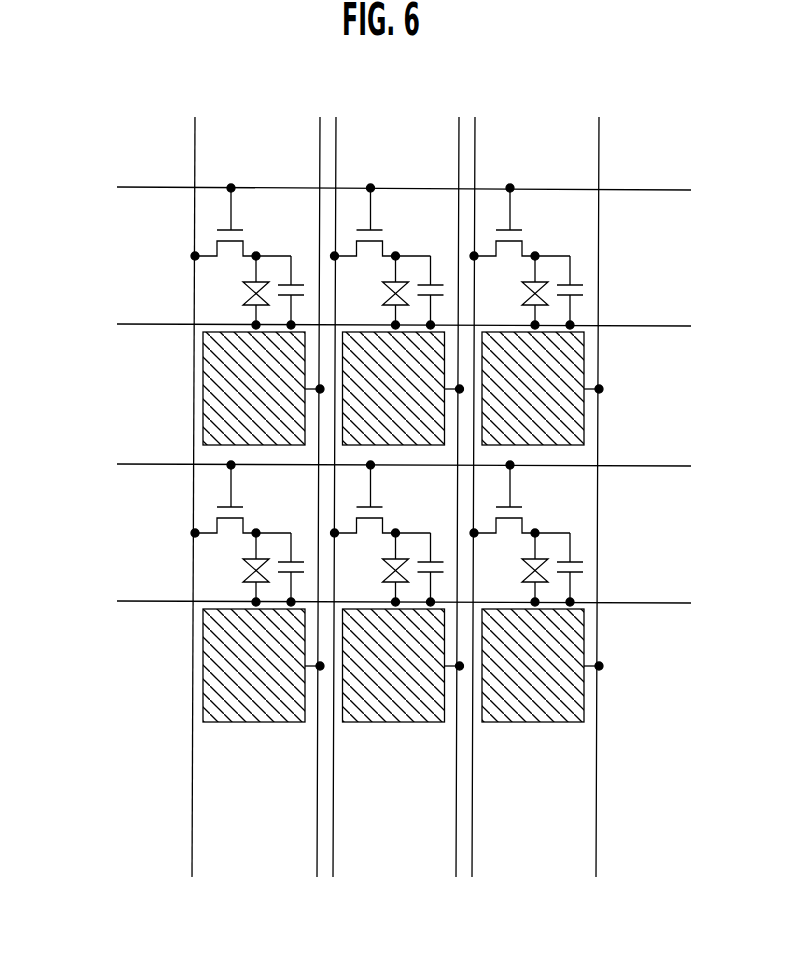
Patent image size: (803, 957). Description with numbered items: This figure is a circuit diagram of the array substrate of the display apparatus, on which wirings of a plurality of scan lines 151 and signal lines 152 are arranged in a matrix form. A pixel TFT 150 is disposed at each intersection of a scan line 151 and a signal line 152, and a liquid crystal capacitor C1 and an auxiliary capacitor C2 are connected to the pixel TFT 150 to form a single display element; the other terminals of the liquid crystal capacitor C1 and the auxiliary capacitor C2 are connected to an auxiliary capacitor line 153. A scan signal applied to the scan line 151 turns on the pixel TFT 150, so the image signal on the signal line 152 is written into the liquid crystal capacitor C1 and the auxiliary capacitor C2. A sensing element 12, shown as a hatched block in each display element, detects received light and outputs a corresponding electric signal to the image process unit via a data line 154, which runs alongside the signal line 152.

The sensing element 12 is at (203, 389).
The pixel TFT 150 is at (218, 235).
The scan line 151 is at (134, 190).
The signal line 152 is at (196, 135).
The auxiliary capacitor line 153 is at (134, 327).
The data line 154 is at (321, 135).
The liquid crystal capacitor C1 is at (246, 292).
The auxiliary capacitor C2 is at (295, 292).